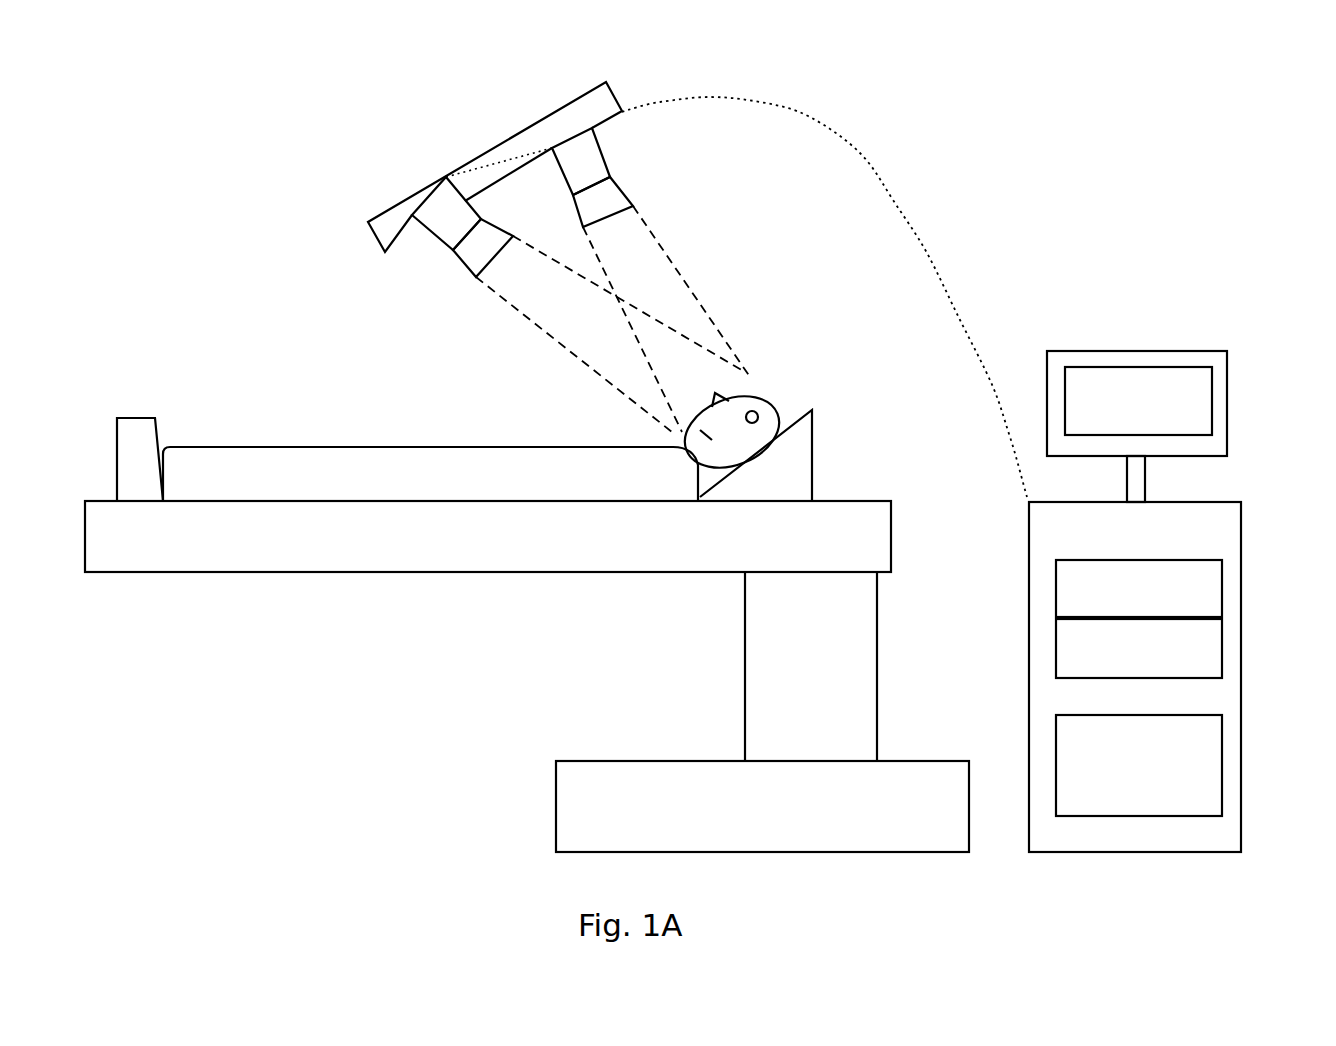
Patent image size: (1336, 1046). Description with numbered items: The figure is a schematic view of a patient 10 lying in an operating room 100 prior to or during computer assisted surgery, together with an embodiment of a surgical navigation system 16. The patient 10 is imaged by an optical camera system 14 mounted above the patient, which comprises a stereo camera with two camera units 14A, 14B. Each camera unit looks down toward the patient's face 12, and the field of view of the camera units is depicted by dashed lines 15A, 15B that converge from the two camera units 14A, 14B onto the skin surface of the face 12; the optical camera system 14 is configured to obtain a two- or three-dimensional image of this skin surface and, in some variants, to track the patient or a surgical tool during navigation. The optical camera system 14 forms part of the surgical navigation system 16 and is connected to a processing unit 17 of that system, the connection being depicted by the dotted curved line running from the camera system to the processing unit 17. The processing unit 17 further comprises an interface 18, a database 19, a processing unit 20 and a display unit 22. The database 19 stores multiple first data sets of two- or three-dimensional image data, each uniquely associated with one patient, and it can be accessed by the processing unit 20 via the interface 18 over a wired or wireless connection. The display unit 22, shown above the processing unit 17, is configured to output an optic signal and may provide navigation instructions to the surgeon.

The operating room 100 is at (177, 86).
The patient 10 is at (257, 446).
The patient's face 12 is at (742, 386).
The optical camera system 14 is at (367, 234).
The camera unit 14A is at (438, 208).
The camera unit 14B is at (568, 140).
The field of view 15A is at (610, 334).
The field of view 15B is at (666, 319).
The surgical navigation system 16 is at (1017, 225).
The processing unit 17 is at (1245, 553).
The interface 18 is at (1139, 588).
The database 19 is at (1139, 648).
The processing unit 20 is at (1139, 765).
The display unit 22 is at (1158, 356).